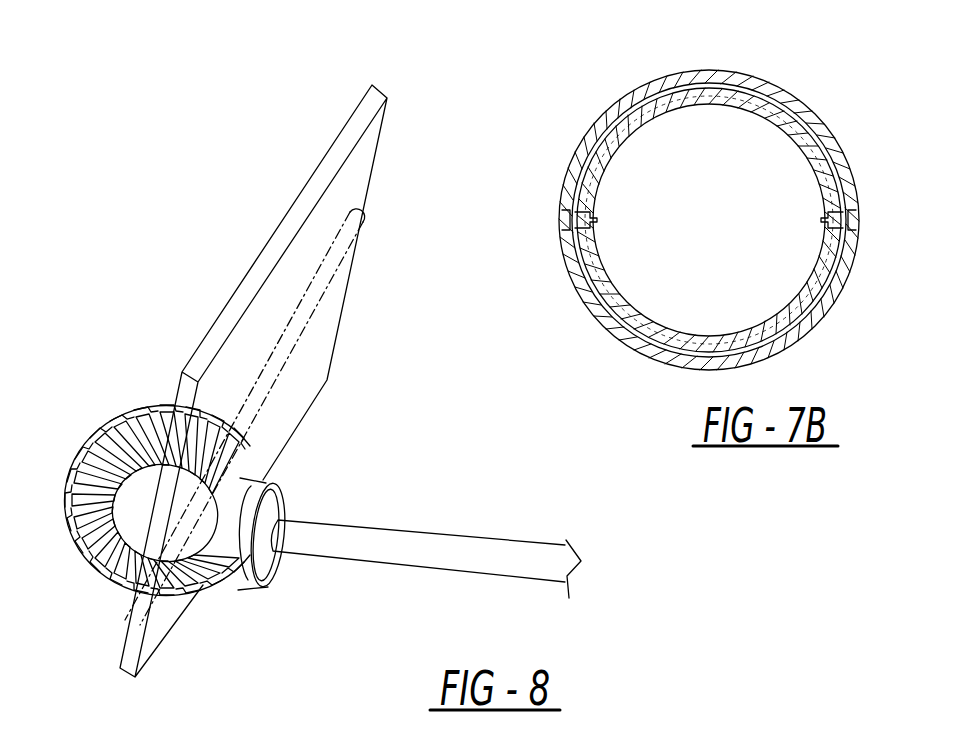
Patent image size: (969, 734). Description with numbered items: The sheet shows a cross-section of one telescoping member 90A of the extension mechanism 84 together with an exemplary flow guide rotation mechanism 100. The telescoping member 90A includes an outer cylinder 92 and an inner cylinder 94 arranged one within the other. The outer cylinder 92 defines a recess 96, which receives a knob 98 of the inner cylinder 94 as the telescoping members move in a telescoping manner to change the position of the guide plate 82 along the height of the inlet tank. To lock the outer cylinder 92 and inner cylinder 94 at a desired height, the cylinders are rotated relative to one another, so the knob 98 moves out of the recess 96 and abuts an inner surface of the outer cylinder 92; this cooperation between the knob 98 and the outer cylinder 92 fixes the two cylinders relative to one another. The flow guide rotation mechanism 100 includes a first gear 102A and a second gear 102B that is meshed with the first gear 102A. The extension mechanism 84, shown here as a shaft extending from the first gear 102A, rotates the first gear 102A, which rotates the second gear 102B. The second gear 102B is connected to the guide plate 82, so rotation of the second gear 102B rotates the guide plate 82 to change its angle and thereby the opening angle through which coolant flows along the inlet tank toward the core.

In FIG. 8, the guide plate 82 is at (265, 255).
In FIG. 8, the extension mechanism 84 is at (385, 547).
In FIG. 7B, the telescoping member 90A is at (808, 104).
In FIG. 7B, the outer cylinder 92 is at (618, 112).
In FIG. 7B, the inner cylinder 94 is at (660, 110).
In FIG. 7B, the recess 96 is at (565, 216).
In FIG. 7B, the knob 98 is at (566, 232).
In FIG. 8, the flow guide rotation mechanism 100 is at (196, 486).
In FIG. 8, the first gear 102A is at (235, 592).
In FIG. 8, the second gear 102B is at (115, 420).